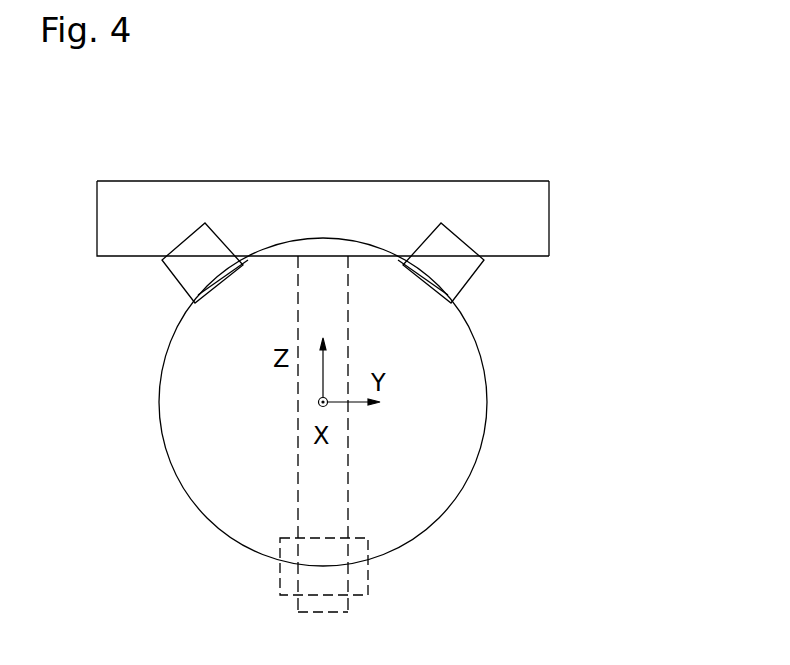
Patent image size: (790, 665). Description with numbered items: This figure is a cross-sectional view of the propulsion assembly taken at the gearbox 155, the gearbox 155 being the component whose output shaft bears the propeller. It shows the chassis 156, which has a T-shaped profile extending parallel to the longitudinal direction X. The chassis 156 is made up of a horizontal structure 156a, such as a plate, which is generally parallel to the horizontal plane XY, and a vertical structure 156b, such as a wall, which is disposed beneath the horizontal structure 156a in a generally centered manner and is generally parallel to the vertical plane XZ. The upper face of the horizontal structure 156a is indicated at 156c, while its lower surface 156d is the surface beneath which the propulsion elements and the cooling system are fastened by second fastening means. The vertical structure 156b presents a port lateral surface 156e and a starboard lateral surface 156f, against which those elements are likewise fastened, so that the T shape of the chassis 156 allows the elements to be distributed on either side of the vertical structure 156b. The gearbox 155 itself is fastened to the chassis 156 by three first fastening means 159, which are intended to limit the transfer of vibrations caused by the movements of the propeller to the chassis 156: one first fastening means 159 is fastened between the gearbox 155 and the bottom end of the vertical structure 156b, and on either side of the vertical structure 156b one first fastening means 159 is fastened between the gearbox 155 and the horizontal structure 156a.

The gearbox 155 is at (438, 373).
The chassis 156 is at (595, 230).
The horizontal structure 156a is at (510, 203).
The vertical structure 156b is at (347, 434).
The top edge of plate 156c is at (207, 181).
The lower surface 156d is at (540, 269).
The port lateral surface 156e is at (349, 500).
The starboard lateral surface 156f is at (297, 493).
The first fastening means 159 is at (187, 275).